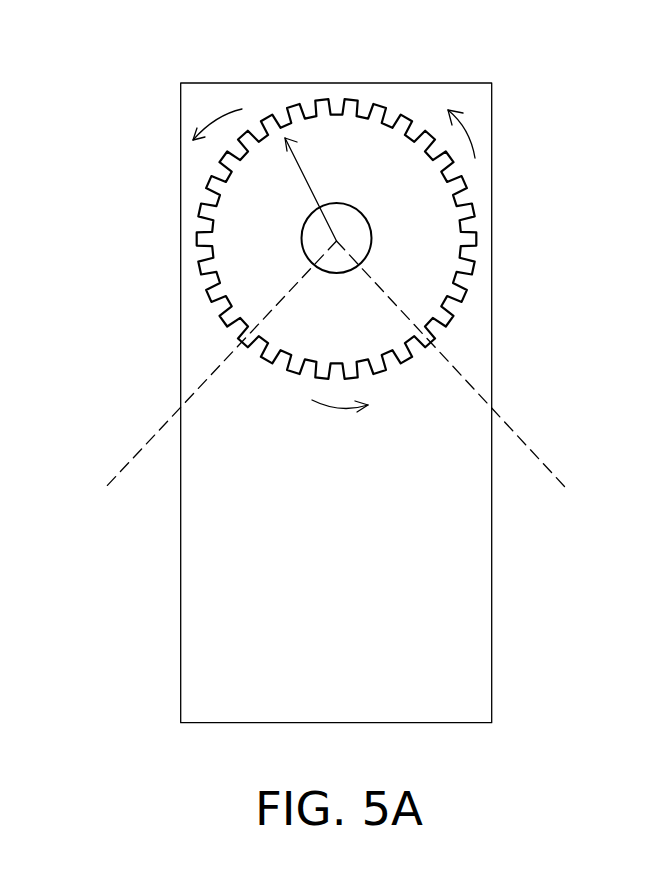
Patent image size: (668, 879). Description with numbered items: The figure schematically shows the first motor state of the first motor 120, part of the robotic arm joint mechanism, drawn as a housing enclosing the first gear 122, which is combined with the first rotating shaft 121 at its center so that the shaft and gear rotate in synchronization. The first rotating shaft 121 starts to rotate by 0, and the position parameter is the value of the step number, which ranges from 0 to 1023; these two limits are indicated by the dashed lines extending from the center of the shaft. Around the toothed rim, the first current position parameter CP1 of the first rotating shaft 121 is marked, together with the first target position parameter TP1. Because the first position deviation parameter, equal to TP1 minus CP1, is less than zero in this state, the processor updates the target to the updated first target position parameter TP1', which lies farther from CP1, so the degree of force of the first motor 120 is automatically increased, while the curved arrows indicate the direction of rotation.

The first motor 120 is at (478, 83).
The first rotating shaft 121 is at (372, 233).
The first gear 122 is at (402, 187).
The first current position parameter CP1 is at (270, 108).
The first target position parameter TP1 is at (344, 55).
The updated first target position parameter TP1' is at (429, 66).
The maximum step number of the first motor 1023 is at (194, 384).
The starting step number of the first motor 0 is at (457, 383).